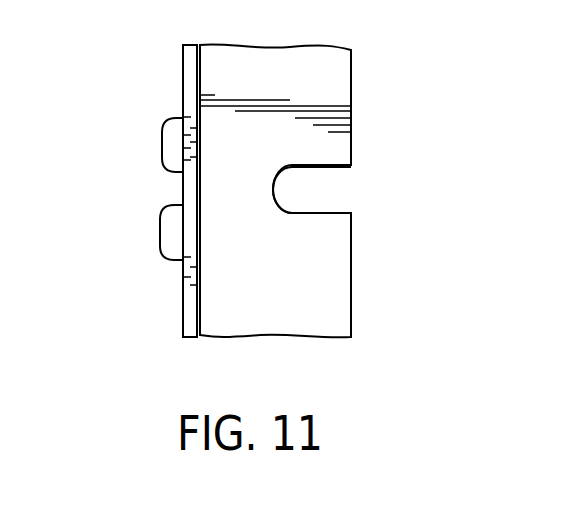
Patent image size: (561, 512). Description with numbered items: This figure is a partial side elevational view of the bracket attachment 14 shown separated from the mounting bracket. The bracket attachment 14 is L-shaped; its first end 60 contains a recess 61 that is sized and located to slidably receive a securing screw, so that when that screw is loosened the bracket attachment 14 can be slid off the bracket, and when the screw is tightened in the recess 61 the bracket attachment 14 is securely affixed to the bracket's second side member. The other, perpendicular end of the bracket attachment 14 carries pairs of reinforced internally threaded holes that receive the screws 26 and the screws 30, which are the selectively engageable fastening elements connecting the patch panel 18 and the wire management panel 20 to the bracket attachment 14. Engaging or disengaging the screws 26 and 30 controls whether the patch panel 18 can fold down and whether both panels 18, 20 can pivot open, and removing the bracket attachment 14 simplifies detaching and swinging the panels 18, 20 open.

The bracket attachment 14 is at (352, 67).
The patch panel 18 is at (183, 80).
The wire management panel 20 is at (183, 297).
The screws 26 is at (162, 145).
The screws 30 is at (160, 240).
The first end 60 is at (323, 277).
The recess 61 is at (322, 167).